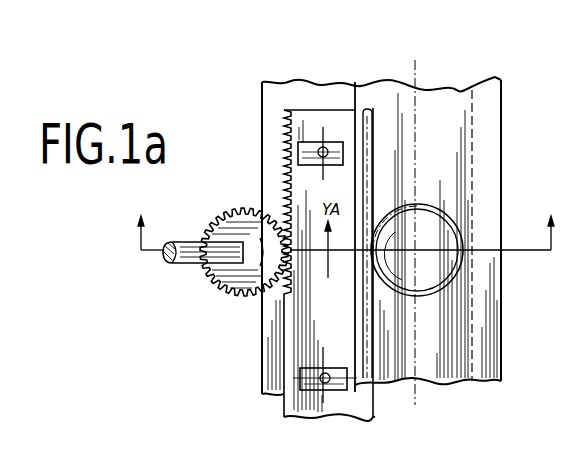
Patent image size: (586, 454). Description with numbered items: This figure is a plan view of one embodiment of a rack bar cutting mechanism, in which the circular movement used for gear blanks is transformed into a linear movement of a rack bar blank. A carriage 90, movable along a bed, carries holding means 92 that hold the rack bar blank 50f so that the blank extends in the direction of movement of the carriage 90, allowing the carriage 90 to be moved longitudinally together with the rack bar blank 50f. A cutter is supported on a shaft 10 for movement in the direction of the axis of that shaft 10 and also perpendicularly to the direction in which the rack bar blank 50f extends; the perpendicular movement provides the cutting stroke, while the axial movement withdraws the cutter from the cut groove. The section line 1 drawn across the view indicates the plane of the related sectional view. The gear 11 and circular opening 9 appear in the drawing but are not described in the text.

The carriage 90 is at (275, 97).
The holding means 92 is at (338, 146).
The rack bar blank 50f is at (290, 174).
The shaft 10 is at (188, 264).
The gear 11 is at (228, 292).
The circular opening 9 is at (427, 203).
The section line 1— 1 is at (347, 223).